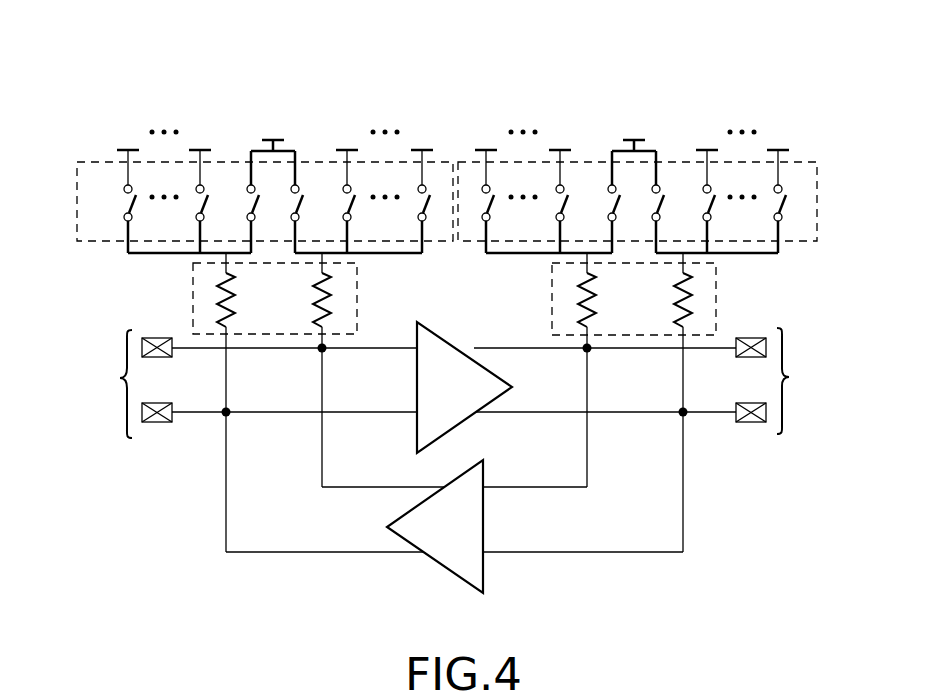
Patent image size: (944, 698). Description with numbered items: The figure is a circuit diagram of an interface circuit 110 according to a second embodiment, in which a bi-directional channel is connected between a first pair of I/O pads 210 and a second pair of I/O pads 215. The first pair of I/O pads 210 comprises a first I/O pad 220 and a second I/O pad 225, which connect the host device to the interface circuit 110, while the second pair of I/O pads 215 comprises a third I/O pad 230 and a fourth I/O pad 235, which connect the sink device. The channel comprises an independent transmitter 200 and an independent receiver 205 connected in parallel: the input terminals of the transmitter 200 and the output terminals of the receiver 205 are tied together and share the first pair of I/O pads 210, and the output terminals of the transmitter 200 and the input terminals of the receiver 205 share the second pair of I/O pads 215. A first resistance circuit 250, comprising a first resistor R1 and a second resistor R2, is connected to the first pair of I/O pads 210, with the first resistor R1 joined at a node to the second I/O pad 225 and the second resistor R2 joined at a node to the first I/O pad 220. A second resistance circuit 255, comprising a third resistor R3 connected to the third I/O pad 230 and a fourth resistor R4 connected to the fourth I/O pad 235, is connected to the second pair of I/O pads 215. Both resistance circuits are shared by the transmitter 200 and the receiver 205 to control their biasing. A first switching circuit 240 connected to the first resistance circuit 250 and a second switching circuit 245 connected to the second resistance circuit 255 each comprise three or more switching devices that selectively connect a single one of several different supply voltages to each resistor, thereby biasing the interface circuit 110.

The interface circuit 110 is at (779, 71).
The transmitter 200 is at (438, 332).
The receiver 205 is at (441, 565).
The first pair of I/O pads 210 is at (118, 378).
The second pair of I/O pads 215 is at (791, 377).
The first I/O pad 220 is at (157, 337).
The second I/O pad 225 is at (157, 423).
The third I/O pad 230 is at (746, 337).
The fourth I/O pad 235 is at (749, 423).
The first switching circuit 240 is at (77, 180).
The second switching circuit 245 is at (817, 173).
The first resistance circuit 250 is at (357, 275).
The second resistance circuit 255 is at (716, 275).
The first resistor R1 is at (232, 276).
The second resistor R2 is at (318, 319).
The third resistor R3 is at (593, 276).
The fourth resistor R4 is at (680, 317).